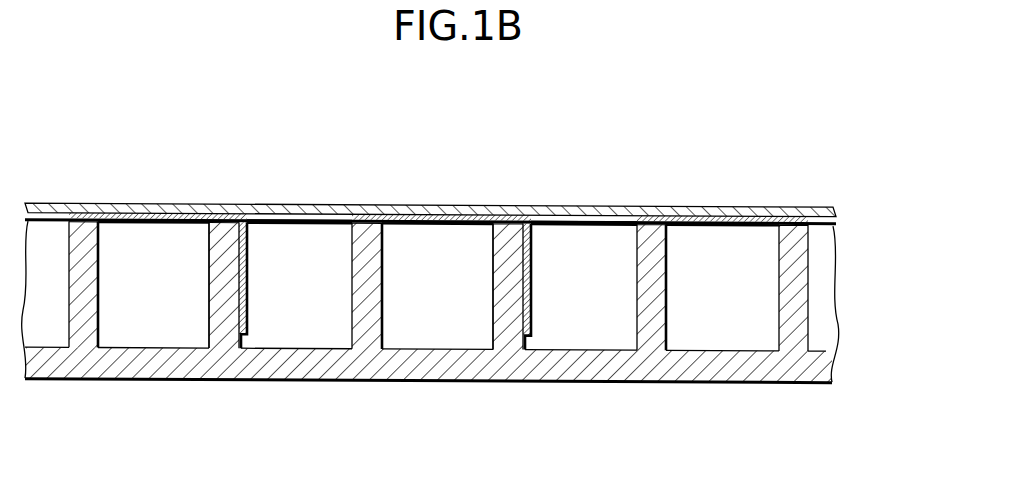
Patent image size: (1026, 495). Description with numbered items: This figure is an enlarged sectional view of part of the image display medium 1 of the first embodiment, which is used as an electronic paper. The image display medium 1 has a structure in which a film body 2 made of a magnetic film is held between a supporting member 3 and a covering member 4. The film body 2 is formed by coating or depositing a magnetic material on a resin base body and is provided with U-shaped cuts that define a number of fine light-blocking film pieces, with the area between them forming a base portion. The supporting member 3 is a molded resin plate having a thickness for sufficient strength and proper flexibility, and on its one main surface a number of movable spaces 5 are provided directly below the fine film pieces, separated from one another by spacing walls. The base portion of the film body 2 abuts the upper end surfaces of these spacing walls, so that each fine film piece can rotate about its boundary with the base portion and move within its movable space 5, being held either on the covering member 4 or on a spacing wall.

The image display medium 1 is at (732, 100).
The film body 2 is at (449, 226).
The supporting member 3 is at (448, 266).
The covering member 4 is at (764, 210).
The movable space 5 is at (438, 236).